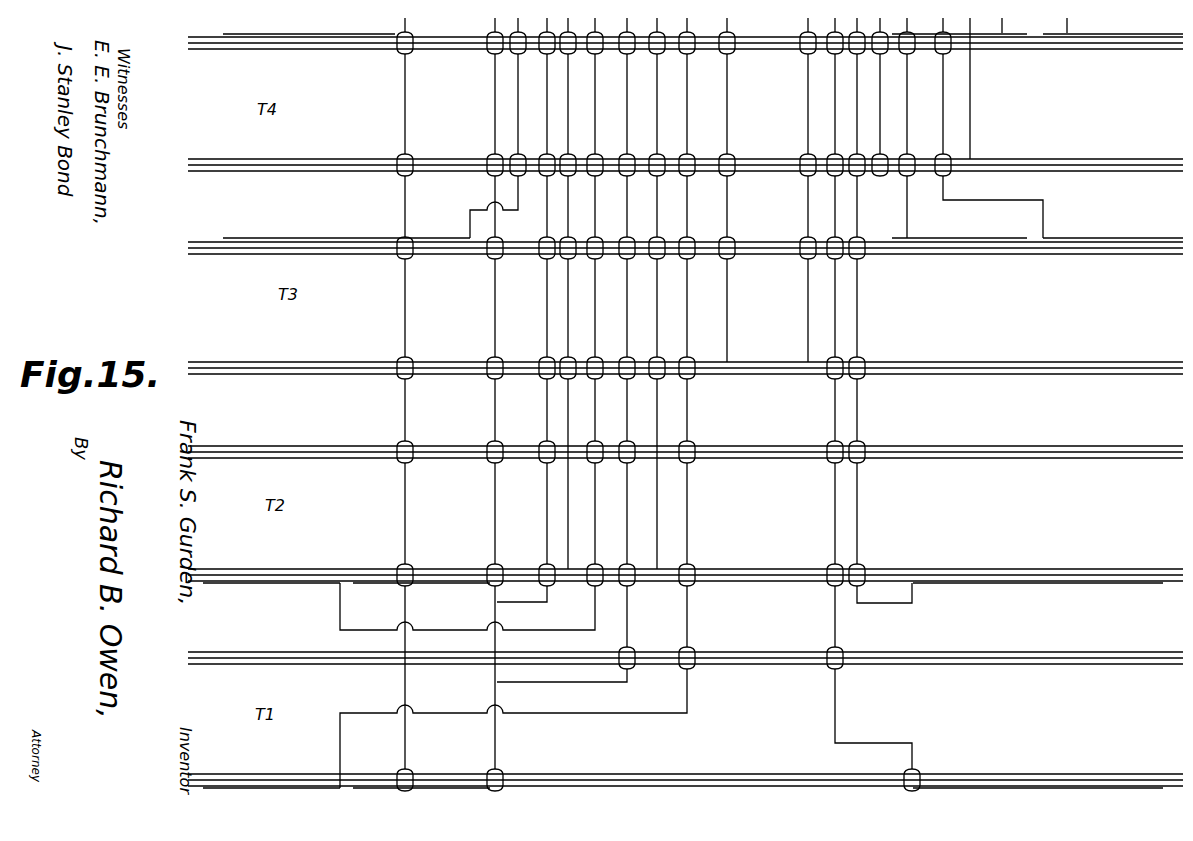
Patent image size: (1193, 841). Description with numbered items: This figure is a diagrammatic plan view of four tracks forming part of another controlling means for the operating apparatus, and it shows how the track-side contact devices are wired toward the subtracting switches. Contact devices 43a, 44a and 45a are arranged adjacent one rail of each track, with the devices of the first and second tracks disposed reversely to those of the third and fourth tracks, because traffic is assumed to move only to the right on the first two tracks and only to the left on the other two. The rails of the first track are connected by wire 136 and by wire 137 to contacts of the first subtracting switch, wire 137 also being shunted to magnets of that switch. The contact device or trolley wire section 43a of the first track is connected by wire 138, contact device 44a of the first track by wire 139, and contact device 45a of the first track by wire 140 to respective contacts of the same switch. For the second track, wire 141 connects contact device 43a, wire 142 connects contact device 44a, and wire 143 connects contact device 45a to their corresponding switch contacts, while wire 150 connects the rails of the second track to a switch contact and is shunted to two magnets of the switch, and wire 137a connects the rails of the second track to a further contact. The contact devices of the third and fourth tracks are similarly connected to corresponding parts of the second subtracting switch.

The contact device 43a is at (1148, 37).
The contact device 44a is at (1036, 37).
The contact device 45a is at (307, 36).
The wire 136 is at (404, 99).
The wire 137 is at (494, 96).
The wire 137a is at (879, 128).
The wire 138 is at (688, 404).
The wire 139 is at (627, 334).
The wire 140 is at (517, 108).
The wire 141 is at (604, 272).
The wire 142 is at (546, 206).
The wire 143 is at (860, 521).
The wire 150 is at (658, 323).